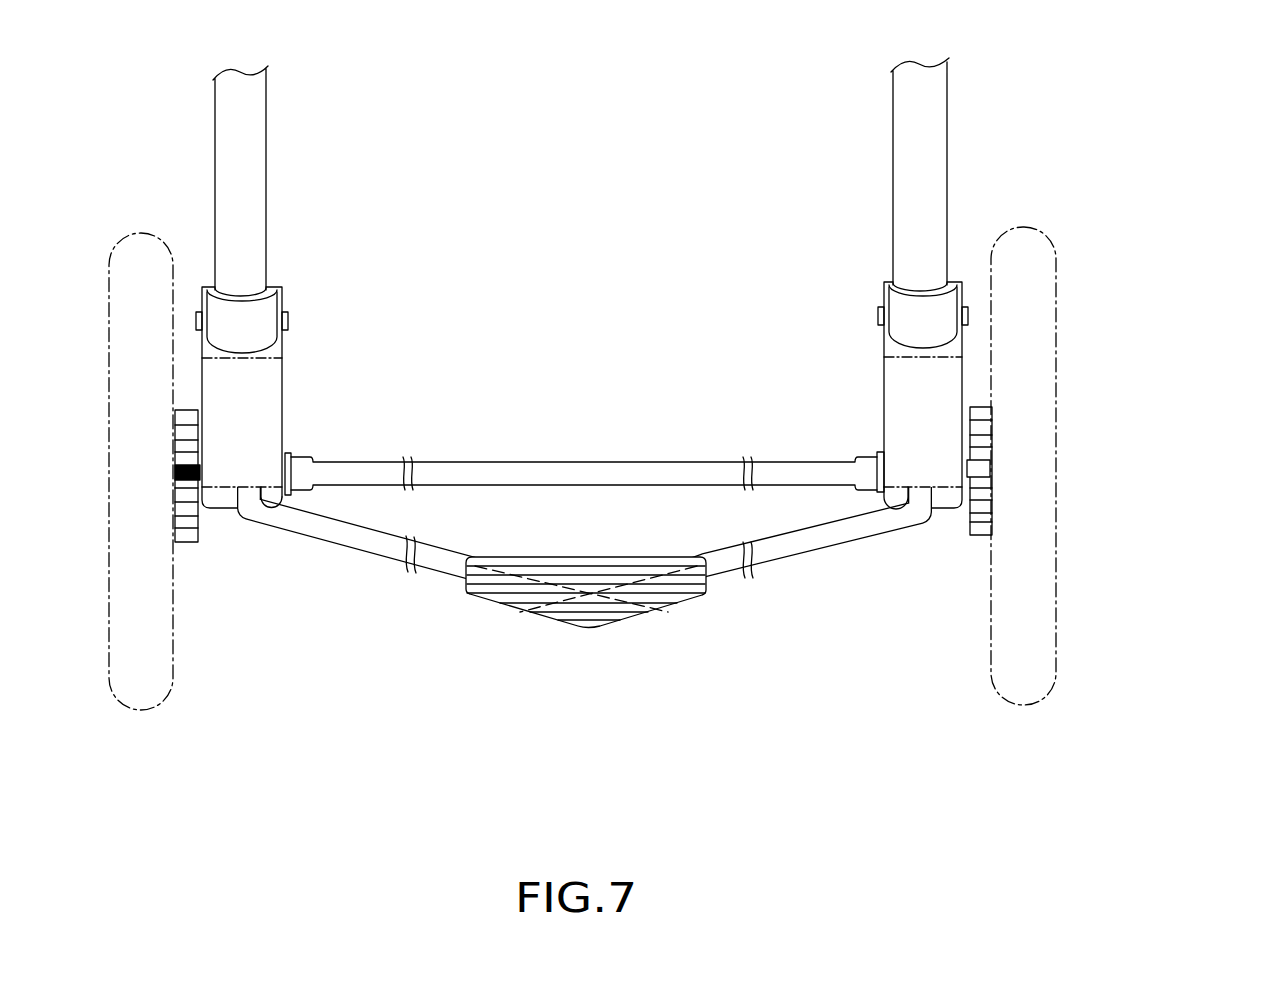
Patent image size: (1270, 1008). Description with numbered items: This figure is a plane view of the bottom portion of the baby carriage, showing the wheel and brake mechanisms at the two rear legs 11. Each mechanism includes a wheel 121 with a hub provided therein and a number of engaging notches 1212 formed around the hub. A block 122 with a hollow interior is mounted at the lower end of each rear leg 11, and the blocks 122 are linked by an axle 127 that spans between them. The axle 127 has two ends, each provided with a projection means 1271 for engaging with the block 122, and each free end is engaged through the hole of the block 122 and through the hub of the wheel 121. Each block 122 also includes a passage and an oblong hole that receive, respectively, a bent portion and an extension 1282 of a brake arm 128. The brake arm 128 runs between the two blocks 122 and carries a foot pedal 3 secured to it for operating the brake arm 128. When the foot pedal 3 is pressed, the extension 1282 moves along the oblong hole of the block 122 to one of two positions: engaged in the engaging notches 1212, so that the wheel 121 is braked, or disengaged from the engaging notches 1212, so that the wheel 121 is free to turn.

The rear leg 11 is at (928, 145).
The wheel 121 is at (1045, 330).
The engaging notches 1212 is at (985, 527).
The block 122 is at (900, 396).
The axle 127 is at (584, 400).
The projection means 1271 is at (302, 463).
The extension 1282 is at (975, 468).
The brake arm 128 is at (828, 538).
The foot pedal 3 is at (643, 603).